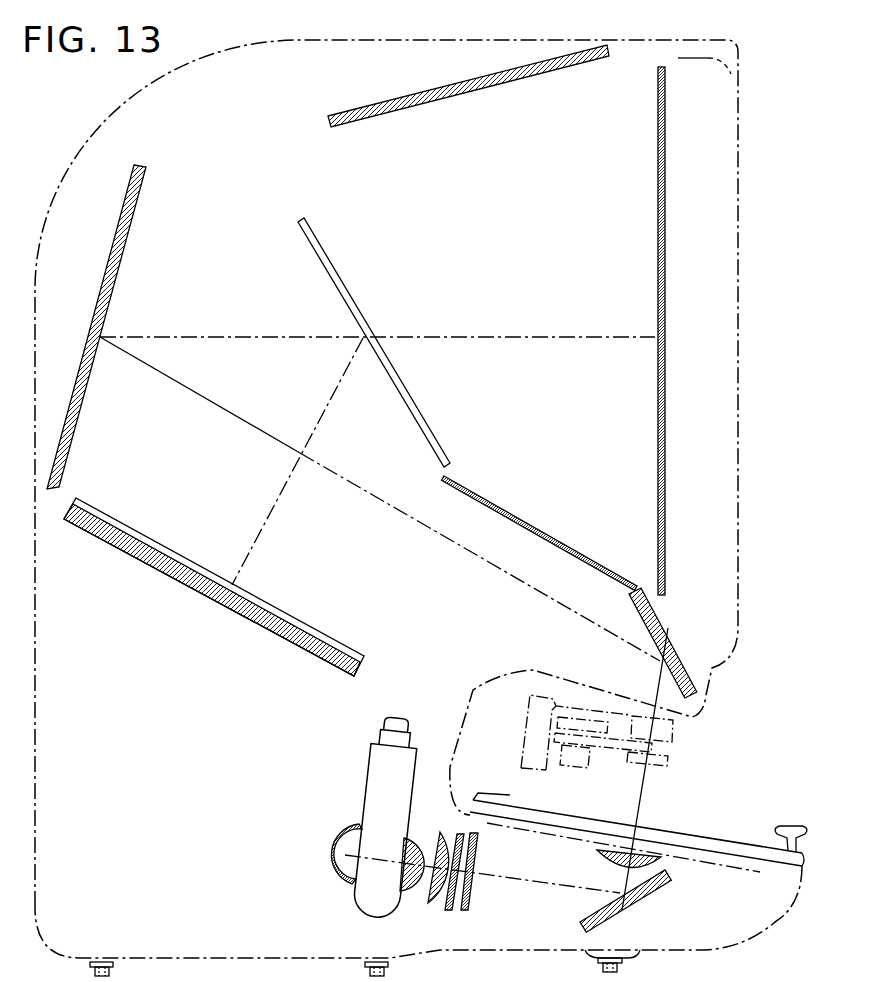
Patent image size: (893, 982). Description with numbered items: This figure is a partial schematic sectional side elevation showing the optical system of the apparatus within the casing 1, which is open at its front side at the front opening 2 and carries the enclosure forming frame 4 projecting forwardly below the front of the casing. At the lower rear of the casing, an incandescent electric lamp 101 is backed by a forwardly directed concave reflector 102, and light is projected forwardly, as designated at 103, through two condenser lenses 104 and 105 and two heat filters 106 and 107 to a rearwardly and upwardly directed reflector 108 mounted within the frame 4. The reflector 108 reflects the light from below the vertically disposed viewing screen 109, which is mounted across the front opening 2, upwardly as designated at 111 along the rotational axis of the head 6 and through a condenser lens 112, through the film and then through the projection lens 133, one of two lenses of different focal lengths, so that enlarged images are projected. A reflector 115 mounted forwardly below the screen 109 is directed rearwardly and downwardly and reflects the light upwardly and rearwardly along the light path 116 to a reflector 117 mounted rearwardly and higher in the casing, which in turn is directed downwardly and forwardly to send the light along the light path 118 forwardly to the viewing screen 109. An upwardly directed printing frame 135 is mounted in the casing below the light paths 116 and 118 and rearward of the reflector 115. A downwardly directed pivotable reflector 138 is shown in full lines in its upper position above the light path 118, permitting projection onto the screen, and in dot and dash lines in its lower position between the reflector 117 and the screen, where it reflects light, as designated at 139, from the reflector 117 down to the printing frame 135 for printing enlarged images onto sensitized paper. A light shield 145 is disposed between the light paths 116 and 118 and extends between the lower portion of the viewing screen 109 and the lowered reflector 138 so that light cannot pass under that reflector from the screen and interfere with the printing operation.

The casing 1 is at (215, 53).
The front opening 2 is at (740, 72).
The enclosure forming frame 4 is at (668, 953).
The head 6 is at (733, 838).
The incandescent electric lamp 101 is at (366, 805).
The concave reflector 102 is at (336, 858).
The forwardly projected light 103 is at (516, 884).
The condenser lens 104 is at (408, 892).
The condenser lens 105 is at (433, 900).
The heat filter 106 is at (451, 908).
The heat filter 107 is at (474, 895).
The reflector 108 is at (599, 918).
The viewing screen 109 is at (659, 270).
The upward light path 111 is at (641, 801).
The condenser lens 112 is at (665, 860).
The reflector 115 is at (640, 617).
The light path 116 is at (491, 538).
The reflector 117 is at (121, 262).
The light path 118 is at (469, 337).
The projection lens 133 is at (692, 722).
The printing frame 135 is at (268, 606).
The reflector 138 is at (477, 90).
The light path 139 is at (268, 515).
The light shield 145 is at (590, 545).